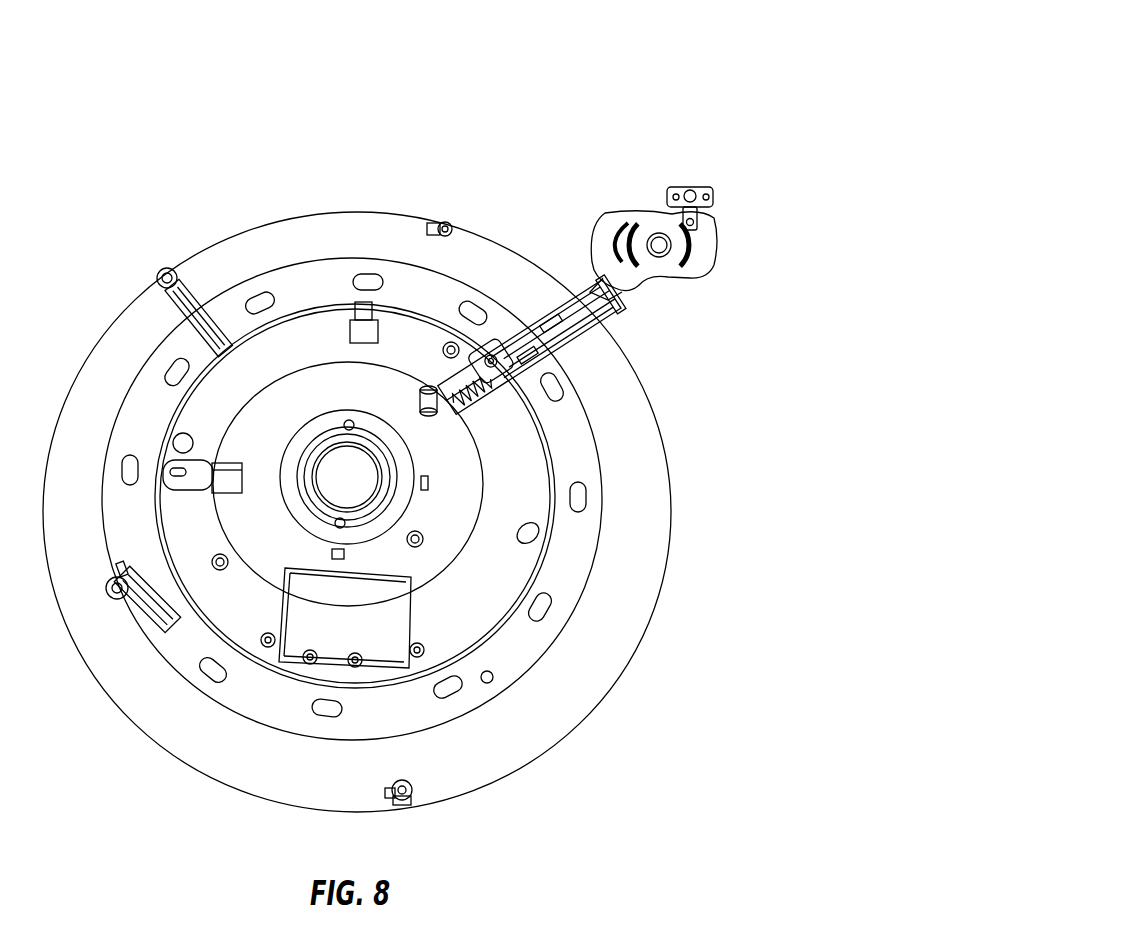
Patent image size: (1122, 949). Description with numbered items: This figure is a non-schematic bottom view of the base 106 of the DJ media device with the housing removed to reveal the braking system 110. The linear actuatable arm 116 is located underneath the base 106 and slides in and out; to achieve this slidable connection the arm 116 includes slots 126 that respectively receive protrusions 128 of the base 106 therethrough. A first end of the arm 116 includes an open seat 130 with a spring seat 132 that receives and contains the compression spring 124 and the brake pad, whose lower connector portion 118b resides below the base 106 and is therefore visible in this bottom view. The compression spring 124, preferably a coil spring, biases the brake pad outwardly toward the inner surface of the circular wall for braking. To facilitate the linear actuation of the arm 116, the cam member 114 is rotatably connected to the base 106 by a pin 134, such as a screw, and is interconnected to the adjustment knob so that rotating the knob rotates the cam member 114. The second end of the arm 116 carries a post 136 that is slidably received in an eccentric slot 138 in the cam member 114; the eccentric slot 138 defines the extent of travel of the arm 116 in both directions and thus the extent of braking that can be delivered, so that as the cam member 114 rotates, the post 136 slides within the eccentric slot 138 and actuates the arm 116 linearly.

The base 106 is at (552, 692).
The braking system 110 is at (660, 233).
The cam member 114 is at (698, 250).
The linear actuatable arm 116 is at (497, 298).
The lower connector portion 118b is at (481, 345).
The compression spring 124 is at (450, 348).
The slots 126 is at (567, 330).
The protrusions 128 is at (504, 343).
The open seat 130 is at (500, 518).
The spring seat 132 is at (515, 575).
The pin 134 is at (671, 187).
The post 136 is at (640, 293).
The eccentric slot 138 is at (617, 200).